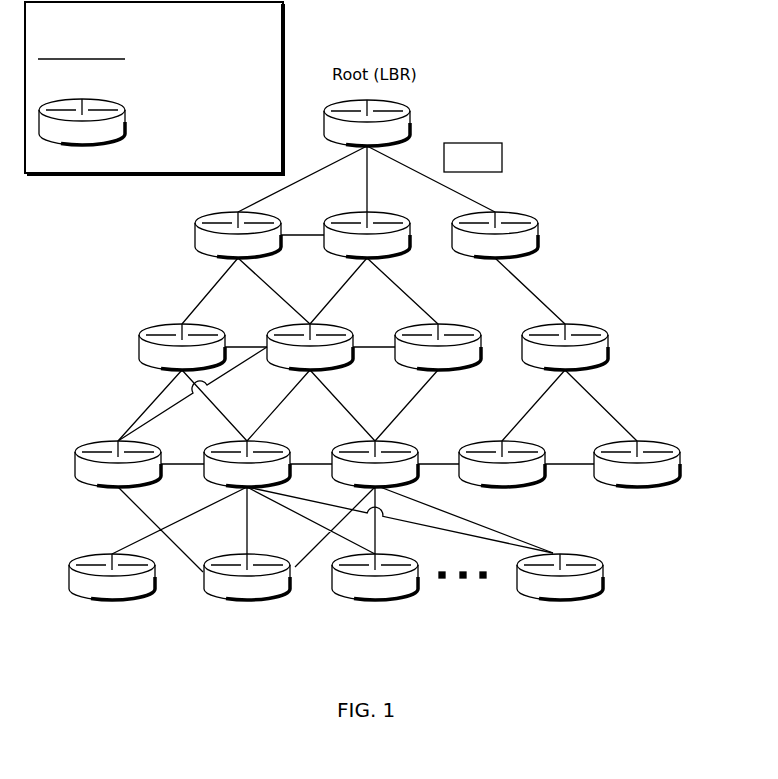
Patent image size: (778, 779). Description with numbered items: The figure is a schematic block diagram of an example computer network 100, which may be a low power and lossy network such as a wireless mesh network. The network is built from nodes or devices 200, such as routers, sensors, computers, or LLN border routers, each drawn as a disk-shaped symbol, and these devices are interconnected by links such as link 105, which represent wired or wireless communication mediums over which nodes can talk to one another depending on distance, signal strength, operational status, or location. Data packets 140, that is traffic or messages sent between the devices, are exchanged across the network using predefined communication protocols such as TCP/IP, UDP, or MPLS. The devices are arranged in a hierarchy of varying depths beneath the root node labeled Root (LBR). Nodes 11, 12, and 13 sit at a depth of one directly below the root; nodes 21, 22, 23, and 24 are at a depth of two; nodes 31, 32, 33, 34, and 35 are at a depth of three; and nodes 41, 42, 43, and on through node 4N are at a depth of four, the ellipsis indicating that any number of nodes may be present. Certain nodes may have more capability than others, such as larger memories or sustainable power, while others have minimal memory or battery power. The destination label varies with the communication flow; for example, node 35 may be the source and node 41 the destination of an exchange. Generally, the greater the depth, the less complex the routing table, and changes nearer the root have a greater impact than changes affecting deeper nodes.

The computer network 100 is at (662, 152).
The link 105 is at (152, 57).
The node/device 200 is at (153, 122).
The data packets 140 is at (490, 181).
The node 11 is at (238, 252).
The node 12 is at (367, 252).
The node 13 is at (495, 251).
The node 21 is at (178, 358).
The node 22 is at (310, 366).
The node 23 is at (438, 362).
The node 24 is at (565, 365).
The node 31 is at (118, 478).
The node 32 is at (247, 481).
The node 33 is at (386, 469).
The node 34 is at (502, 477).
The node 35 is at (637, 477).
The node 41 is at (112, 594).
The node 42 is at (247, 594).
The node 43 is at (375, 594).
The node 4N is at (560, 594).